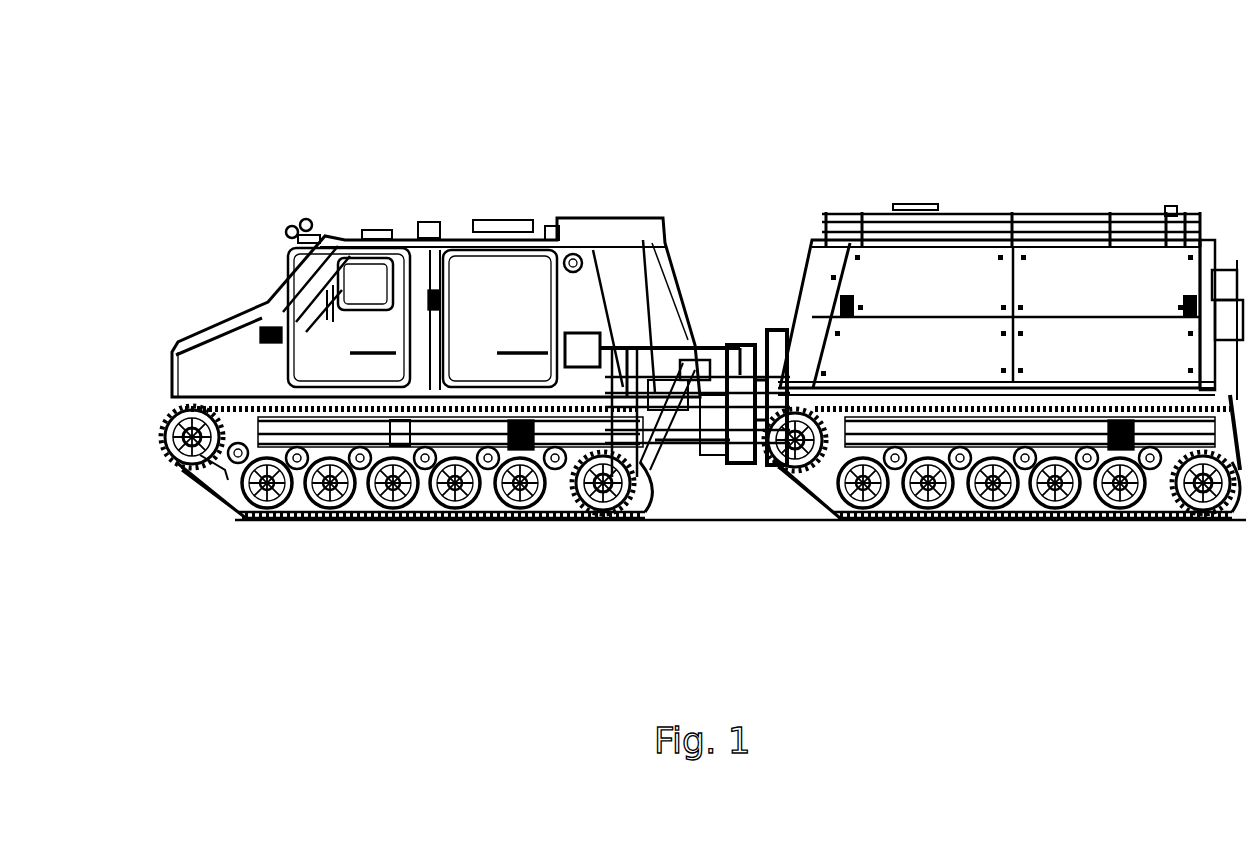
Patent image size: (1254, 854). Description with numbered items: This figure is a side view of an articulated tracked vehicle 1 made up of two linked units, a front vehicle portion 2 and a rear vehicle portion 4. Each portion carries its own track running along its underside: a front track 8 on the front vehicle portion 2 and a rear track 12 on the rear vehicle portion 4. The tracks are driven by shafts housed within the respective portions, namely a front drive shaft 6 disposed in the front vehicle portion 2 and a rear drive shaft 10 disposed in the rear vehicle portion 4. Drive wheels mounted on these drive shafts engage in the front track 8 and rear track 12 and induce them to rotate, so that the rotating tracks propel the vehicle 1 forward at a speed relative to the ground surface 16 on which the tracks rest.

The articulated tracked vehicle 1 is at (188, 188).
The front vehicle portion 2 is at (372, 218).
The rear vehicle portion 4 is at (866, 222).
The front drive shaft 6 is at (183, 466).
The front track 8 is at (233, 507).
The rear drive shaft 10 is at (787, 463).
The rear track 12 is at (827, 490).
The ground surface 16 is at (648, 520).